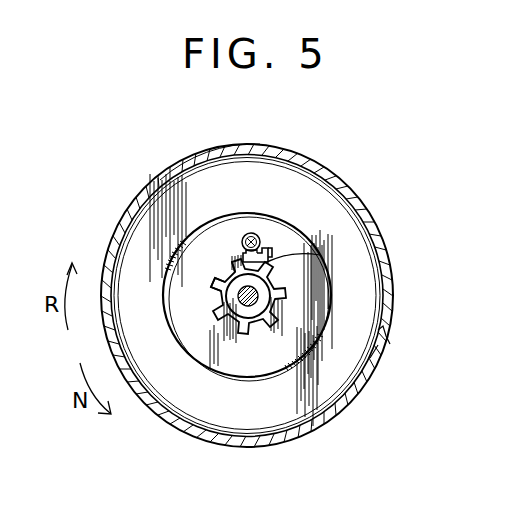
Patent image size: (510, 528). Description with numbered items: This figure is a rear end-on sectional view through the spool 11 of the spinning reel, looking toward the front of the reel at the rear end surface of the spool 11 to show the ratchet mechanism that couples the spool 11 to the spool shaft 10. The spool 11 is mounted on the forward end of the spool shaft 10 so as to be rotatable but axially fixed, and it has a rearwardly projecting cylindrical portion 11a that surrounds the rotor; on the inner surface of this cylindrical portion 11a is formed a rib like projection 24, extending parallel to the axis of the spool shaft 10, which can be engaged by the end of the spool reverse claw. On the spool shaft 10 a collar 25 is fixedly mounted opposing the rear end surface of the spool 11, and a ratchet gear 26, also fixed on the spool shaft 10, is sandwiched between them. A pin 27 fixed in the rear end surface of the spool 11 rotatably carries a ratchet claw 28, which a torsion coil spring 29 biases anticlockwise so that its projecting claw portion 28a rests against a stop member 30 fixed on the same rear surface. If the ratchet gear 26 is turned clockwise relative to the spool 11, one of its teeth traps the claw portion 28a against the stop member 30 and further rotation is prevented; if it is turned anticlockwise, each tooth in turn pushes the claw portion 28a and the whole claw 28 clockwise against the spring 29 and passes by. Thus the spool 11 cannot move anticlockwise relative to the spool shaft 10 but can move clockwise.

The spool shaft 10 is at (262, 306).
The spool 11 is at (178, 397).
The rearwardly projecting cylindrical portion 11a is at (182, 172).
The rib like projection 24 is at (379, 332).
The collar 25 is at (236, 282).
The ratchet gear 26 is at (214, 292).
The pin 27 is at (254, 233).
The ratchet claw 28 is at (243, 238).
The projecting claw portion 28a is at (320, 255).
The torsion coil spring 29 is at (272, 249).
The stop member 30 is at (270, 251).